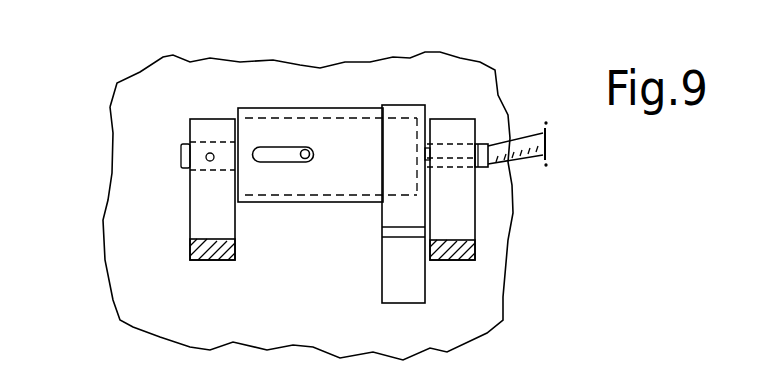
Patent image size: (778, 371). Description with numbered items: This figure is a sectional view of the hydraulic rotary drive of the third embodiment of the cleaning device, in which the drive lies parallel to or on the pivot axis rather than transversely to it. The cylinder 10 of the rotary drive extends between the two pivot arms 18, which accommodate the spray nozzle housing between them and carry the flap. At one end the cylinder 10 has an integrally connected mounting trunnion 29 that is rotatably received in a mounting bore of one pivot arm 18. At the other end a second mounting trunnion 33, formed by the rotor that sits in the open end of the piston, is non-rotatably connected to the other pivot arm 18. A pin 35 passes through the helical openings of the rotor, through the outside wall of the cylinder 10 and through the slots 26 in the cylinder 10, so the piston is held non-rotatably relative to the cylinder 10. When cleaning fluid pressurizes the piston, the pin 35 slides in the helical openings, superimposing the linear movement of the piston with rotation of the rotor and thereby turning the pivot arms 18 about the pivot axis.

The cylinder 10 is at (353, 137).
The pivot arms 18 is at (193, 251).
The slots 26 is at (280, 148).
The mounting trunnion 29 is at (488, 143).
The second mounting trunnion 33 is at (183, 164).
The pin 35 is at (306, 150).